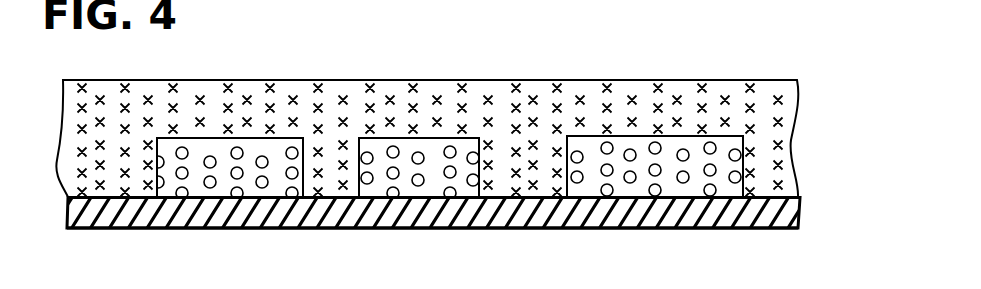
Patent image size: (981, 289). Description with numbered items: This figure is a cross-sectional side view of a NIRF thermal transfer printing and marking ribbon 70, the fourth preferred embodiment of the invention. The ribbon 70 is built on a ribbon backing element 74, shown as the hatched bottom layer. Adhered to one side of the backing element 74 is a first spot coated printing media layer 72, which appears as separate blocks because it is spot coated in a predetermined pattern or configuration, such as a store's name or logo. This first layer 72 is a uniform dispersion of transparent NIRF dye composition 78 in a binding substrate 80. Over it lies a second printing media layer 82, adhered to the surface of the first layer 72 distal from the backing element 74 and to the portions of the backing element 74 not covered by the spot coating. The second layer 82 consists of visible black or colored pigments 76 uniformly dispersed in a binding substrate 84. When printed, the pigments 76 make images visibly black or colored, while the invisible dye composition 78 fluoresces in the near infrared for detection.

The NIRF thermal transfer printing and marking ribbon 70 is at (609, 48).
The first spot coated printing media layer 72 is at (375, 211).
The ribbon backing element 74 is at (683, 218).
The visible black or colored pigments 76 is at (462, 80).
The NIRF dye composition 78 is at (452, 172).
The binding substrate 80 is at (193, 185).
The second printing media layer 82 is at (264, 76).
The binding substrate 84 is at (545, 82).